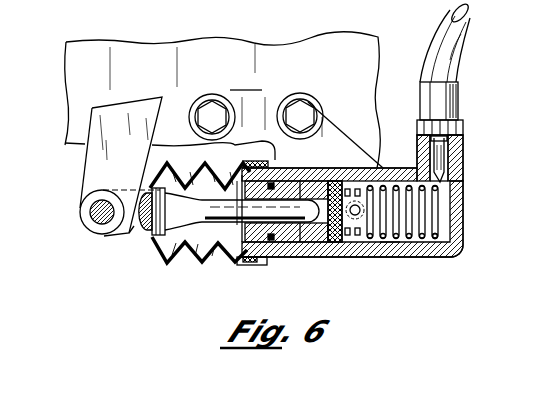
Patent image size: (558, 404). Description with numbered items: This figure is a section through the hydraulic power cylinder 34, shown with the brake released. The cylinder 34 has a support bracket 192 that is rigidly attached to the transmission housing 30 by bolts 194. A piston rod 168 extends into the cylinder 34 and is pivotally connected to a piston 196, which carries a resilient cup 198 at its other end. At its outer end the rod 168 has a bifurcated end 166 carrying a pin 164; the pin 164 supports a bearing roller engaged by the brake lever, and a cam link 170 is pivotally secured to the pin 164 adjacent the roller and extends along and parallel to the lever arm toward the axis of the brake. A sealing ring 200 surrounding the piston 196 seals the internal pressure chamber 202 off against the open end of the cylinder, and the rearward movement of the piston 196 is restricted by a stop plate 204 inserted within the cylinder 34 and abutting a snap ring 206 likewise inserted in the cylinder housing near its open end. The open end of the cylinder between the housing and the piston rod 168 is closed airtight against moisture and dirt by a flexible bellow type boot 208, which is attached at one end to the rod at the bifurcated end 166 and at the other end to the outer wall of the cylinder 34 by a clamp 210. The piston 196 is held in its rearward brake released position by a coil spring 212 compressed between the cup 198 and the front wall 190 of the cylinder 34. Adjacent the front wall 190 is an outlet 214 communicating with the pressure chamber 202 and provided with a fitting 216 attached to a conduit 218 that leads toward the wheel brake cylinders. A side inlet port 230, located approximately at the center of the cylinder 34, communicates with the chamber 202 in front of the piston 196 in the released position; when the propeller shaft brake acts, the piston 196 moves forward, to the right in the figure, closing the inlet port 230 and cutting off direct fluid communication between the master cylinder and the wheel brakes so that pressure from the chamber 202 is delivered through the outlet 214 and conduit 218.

The transmission housing 30 is at (80, 83).
The hydraulic power cylinder 34 is at (393, 253).
The pin 164 is at (92, 212).
The bifurcated end 166 is at (134, 228).
The piston rod 168 is at (190, 252).
The cam link 170 is at (98, 170).
The front wall 190 is at (455, 210).
The support bracket 192 is at (267, 103).
The bolts 194 is at (217, 110).
The piston 196 is at (302, 252).
The resilient cup 198 is at (340, 252).
The sealing ring 200 is at (276, 170).
The chamber 202 is at (445, 200).
The stop plate 204 is at (233, 254).
The snap ring 206 is at (237, 163).
The bellow type boot 208 is at (172, 260).
The clamp 210 is at (256, 264).
The coil spring 212 is at (435, 238).
The outlet 214 is at (447, 174).
The fitting 216 is at (452, 107).
The conduit 218 is at (458, 38).
The side inlet port 230 is at (363, 180).